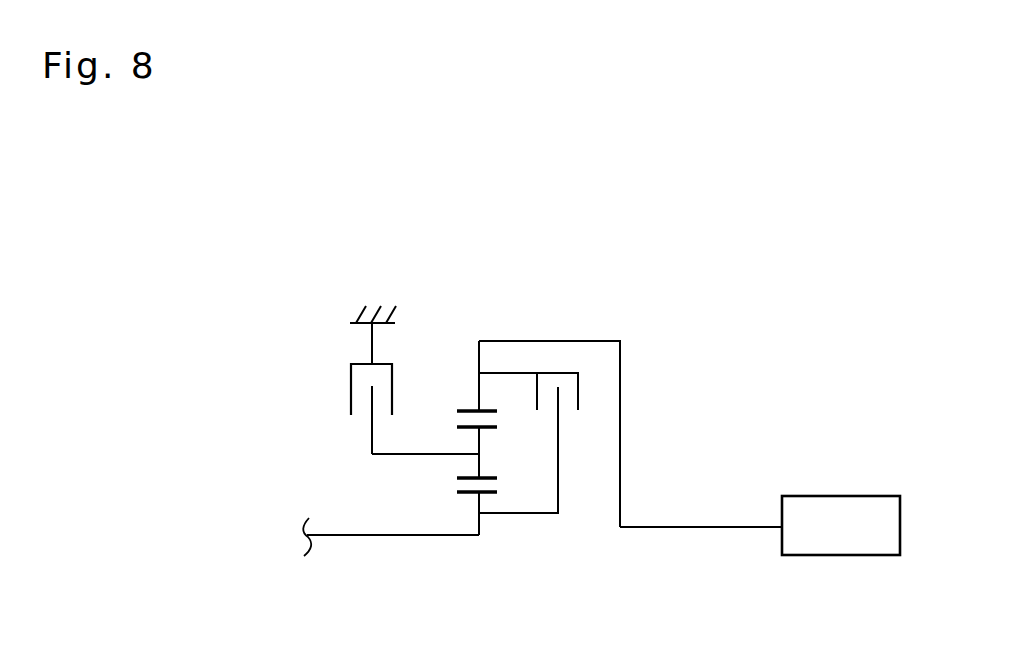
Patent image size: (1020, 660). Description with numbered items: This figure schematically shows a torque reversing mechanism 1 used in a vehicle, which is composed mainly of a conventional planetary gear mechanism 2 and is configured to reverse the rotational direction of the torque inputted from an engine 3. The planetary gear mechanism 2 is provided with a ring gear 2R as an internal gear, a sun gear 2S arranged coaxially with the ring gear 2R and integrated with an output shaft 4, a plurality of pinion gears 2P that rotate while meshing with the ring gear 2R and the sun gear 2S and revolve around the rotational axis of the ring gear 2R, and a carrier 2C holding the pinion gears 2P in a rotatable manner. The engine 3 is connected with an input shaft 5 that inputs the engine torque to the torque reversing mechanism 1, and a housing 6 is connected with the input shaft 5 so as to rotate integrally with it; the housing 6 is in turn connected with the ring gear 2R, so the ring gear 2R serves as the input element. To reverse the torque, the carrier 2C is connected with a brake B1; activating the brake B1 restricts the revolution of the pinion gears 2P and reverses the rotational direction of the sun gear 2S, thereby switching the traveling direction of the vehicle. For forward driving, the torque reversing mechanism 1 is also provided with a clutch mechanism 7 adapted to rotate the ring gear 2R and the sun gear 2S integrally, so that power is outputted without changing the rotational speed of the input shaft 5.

The torque reversing mechanism 1 is at (597, 318).
The planetary gear mechanism 2 is at (441, 372).
The ring gear 2R is at (482, 411).
The carrier 2C is at (422, 455).
The sun gear 2S is at (468, 493).
The pinion gear 2P is at (481, 463).
The engine 3 is at (848, 496).
The output shaft 4 is at (348, 536).
The input shaft 5 is at (725, 527).
The housing 6 is at (621, 447).
The clutch mechanism 7 is at (594, 385).
The brake B1 is at (334, 364).